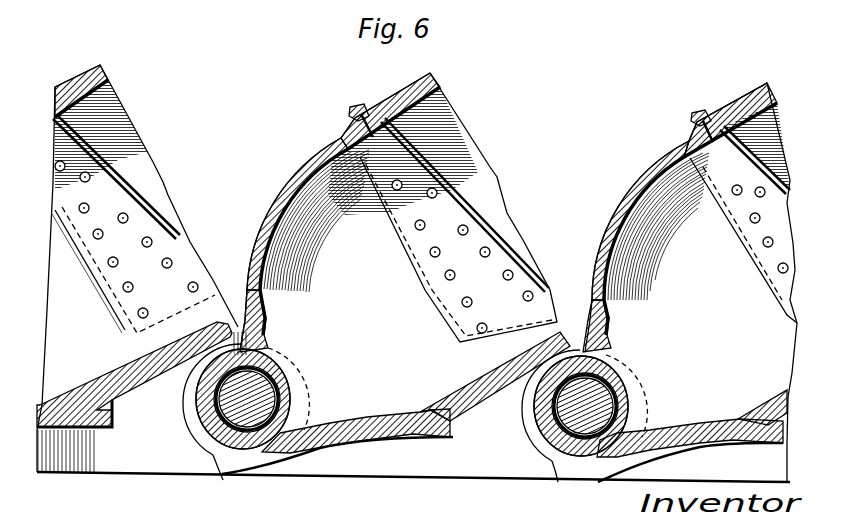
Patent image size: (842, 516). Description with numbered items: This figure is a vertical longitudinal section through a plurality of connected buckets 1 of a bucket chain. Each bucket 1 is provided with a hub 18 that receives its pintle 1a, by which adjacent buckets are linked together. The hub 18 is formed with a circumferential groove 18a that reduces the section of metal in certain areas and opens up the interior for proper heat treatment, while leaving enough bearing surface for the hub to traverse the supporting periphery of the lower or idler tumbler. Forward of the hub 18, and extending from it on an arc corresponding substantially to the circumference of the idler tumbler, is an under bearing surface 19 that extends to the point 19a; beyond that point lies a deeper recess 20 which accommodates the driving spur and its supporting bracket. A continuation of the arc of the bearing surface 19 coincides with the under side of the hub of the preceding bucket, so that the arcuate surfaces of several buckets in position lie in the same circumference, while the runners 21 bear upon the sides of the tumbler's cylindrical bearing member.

The bucket 1 is at (283, 194).
The pintle 1a is at (226, 398).
The hub 18 is at (182, 412).
The circumferential groove 18a is at (223, 472).
The bearing surface 19 is at (378, 440).
The point 19a is at (455, 439).
The recess 20 is at (603, 378).
The runner 21 is at (447, 479).